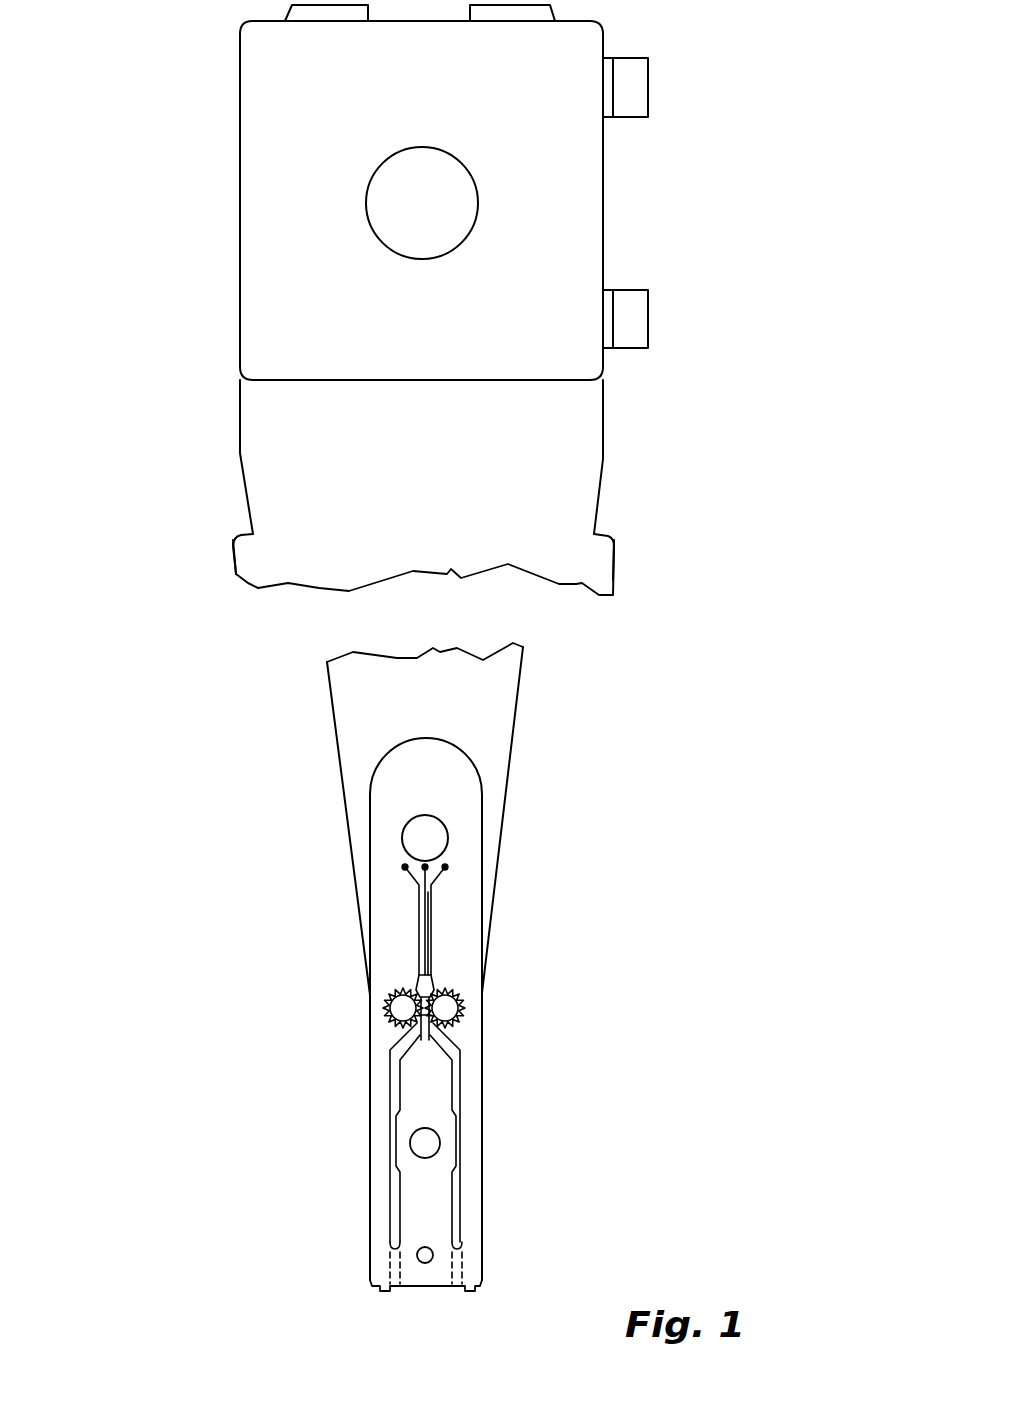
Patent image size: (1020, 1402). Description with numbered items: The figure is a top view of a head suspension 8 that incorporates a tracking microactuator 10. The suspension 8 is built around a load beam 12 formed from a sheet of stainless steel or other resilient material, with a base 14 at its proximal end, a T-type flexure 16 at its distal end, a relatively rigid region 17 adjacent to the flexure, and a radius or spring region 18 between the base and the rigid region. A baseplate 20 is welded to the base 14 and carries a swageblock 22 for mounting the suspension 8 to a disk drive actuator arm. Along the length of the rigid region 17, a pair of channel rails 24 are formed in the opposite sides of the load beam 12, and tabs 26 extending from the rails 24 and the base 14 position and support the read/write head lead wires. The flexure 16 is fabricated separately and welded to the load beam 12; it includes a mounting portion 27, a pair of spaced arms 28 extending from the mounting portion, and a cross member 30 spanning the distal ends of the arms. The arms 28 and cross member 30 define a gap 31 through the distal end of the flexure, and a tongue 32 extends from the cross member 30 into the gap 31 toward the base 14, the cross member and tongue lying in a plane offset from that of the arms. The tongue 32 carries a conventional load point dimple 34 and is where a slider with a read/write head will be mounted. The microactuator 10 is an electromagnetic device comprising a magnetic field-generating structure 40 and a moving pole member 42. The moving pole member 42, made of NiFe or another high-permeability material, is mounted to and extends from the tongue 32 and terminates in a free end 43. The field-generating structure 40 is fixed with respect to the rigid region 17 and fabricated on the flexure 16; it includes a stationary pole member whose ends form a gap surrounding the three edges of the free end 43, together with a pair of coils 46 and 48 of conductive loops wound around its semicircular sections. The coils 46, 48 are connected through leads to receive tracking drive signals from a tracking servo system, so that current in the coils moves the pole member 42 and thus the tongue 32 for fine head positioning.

The head suspension 8 is at (188, 640).
The tracking microactuator 10 is at (450, 982).
The load beam 12 is at (532, 647).
The base 14 is at (605, 195).
The T-type flexure 16 is at (352, 1088).
The rigid region 17 is at (552, 546).
The spring region 18 is at (586, 414).
The baseplate 20 is at (266, 281).
The swageblock 22 is at (387, 172).
The channel rails 24 is at (238, 551).
The tabs 26 is at (640, 318).
The mounting portion 27 is at (388, 800).
The spaced arms 28 is at (370, 1217).
The cross member 30 is at (430, 1275).
The gap 31 is at (455, 1083).
The tongue 32 is at (427, 1175).
The load point dimple 34 is at (413, 1143).
The magnetic field-generating structure 40 is at (472, 1003).
The moving pole member 42 is at (425, 1040).
The free end 43 is at (420, 1023).
The coil 46 is at (380, 990).
The coil 48 is at (472, 981).